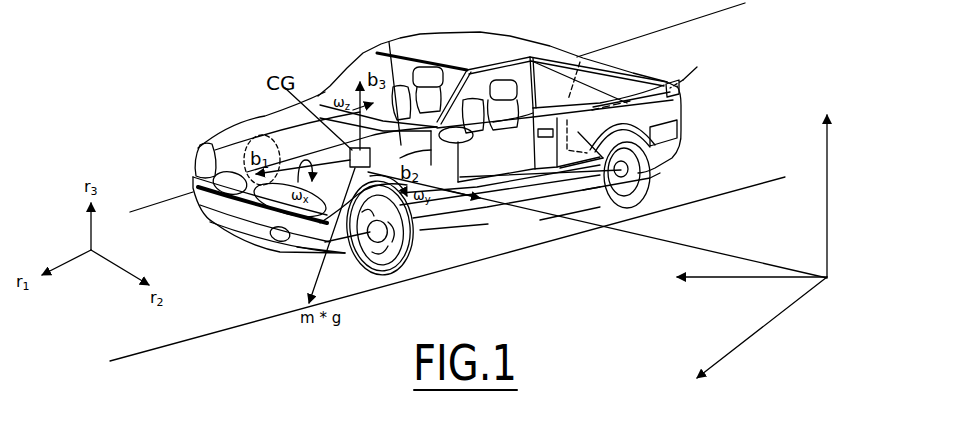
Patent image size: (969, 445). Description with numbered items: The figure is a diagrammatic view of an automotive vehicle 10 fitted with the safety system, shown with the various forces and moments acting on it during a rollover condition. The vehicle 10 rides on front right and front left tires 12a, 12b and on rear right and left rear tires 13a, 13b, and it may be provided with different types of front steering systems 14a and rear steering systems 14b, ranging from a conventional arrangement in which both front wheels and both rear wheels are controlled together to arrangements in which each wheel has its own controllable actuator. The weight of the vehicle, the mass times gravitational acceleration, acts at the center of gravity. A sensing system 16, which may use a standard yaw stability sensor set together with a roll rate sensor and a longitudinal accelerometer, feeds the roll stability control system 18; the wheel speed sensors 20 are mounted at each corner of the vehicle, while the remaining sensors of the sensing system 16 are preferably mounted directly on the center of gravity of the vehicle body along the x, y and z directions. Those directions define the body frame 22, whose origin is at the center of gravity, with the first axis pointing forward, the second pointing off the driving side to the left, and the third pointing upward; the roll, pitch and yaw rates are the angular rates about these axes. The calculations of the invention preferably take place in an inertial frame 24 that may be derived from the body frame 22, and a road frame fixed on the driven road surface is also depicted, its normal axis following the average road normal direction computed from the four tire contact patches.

The automotive vehicle 10 is at (507, 36).
The front right tire 12a is at (237, 148).
The front left tire 12b is at (390, 275).
The rear right tire 13a is at (669, 76).
The left rear tire 13b is at (667, 173).
The front steering system 14a is at (297, 247).
The rear steering system 14b is at (680, 108).
The sensing system 16 is at (385, 80).
The roll stability control system 18 is at (580, 62).
The wheel speed sensors 20 is at (470, 229).
The body frame 22 is at (350, 155).
The inertial frame 24 is at (837, 280).